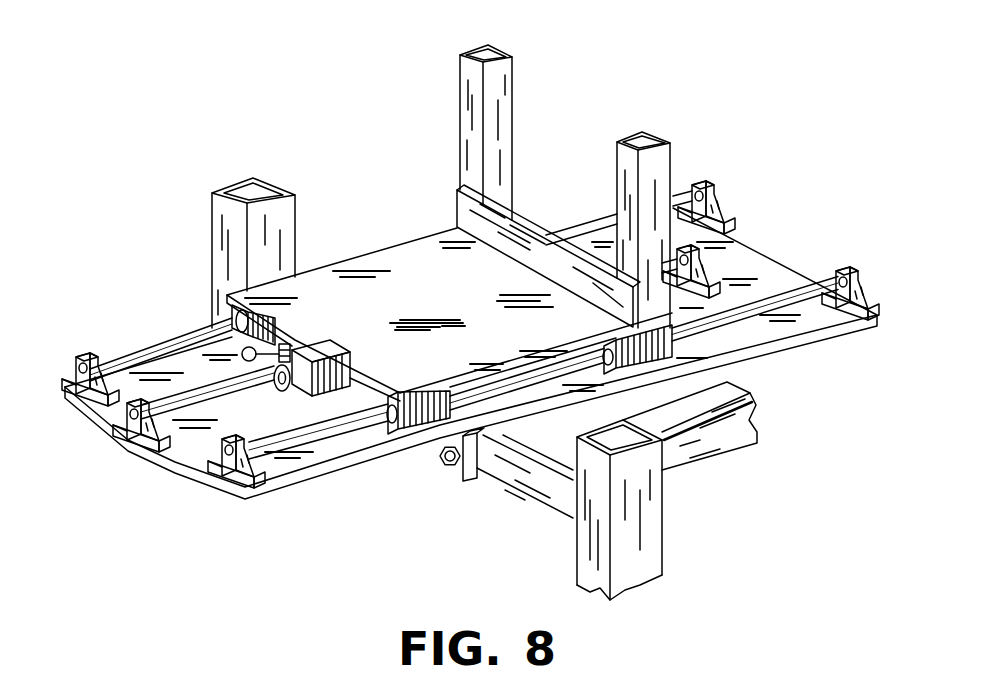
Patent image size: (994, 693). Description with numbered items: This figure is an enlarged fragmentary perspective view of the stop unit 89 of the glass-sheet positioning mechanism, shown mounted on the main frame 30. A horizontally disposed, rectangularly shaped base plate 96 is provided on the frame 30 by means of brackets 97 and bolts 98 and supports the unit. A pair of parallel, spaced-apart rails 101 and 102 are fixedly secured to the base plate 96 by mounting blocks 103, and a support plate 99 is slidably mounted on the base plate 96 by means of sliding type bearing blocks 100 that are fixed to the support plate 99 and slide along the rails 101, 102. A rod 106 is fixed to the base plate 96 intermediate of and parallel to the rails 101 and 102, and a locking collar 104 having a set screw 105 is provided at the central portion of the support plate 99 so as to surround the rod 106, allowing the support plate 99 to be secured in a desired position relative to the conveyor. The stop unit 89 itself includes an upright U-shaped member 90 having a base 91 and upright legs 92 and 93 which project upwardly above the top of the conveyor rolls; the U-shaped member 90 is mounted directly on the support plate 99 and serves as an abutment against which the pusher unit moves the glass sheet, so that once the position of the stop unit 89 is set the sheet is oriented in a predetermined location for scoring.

The frame 30 is at (553, 517).
The stop unit 89 is at (486, 232).
The U-shaped member 90 is at (569, 186).
The base 91 is at (467, 213).
The upright leg 92 is at (470, 100).
The upright leg 93 is at (625, 188).
The base plate 96 is at (314, 475).
The bracket 97 is at (464, 480).
The bolt 98 is at (445, 463).
The support plate 99 is at (372, 268).
The bearing block 100 is at (236, 318).
The rail 101 is at (262, 445).
The rail 102 is at (118, 350).
The mounting block 103 is at (718, 208).
The locking collar 104 is at (338, 358).
The set screw 105 is at (290, 346).
The rod 106 is at (185, 408).